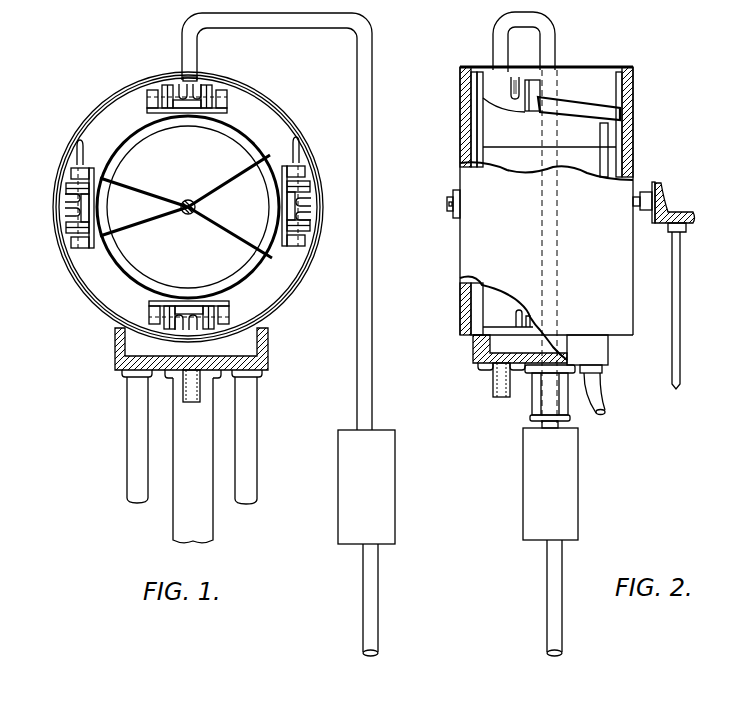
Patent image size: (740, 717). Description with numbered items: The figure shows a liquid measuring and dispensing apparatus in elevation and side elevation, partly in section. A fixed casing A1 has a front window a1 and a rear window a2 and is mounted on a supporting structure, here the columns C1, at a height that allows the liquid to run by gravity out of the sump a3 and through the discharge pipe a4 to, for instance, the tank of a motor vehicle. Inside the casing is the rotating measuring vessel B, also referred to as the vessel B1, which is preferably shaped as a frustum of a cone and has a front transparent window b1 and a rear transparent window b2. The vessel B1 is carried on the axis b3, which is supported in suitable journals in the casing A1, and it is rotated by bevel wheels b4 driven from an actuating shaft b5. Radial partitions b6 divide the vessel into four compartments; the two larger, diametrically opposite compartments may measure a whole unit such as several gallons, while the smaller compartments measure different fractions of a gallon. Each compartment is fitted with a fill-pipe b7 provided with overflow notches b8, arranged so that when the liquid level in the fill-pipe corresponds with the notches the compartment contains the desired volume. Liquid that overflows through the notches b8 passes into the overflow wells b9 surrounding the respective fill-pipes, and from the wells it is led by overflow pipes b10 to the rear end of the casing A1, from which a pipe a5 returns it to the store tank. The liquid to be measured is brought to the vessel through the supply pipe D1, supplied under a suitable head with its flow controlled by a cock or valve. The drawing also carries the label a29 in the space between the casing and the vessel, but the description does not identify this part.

In FIG. 1, the fixed casing A1 is at (62, 151).
In FIG. 2, the fixed casing A1 is at (463, 257).
In FIG. 1, the measuring vessel B1 is at (262, 136).
In FIG. 1, the columns C1 is at (187, 520).
In FIG. 2, the columns C1 is at (532, 412).
In FIG. 1, the supply pipe D1 is at (181, 30).
In FIG. 2, the supply pipe D1 is at (533, 4).
In FIG. 1, the front window a1 is at (387, 515).
In FIG. 2, the front window a1 is at (460, 127).
In FIG. 2, the rear window a2 is at (634, 150).
In FIG. 1, the sump a3 is at (266, 348).
In FIG. 2, the sump a3 is at (492, 343).
In FIG. 1, the discharge pipe a4 is at (196, 404).
In FIG. 2, the discharge pipe a4 is at (502, 392).
In FIG. 2, the pipe a5 is at (601, 414).
In FIG. 1, the annular chamber a29 is at (85, 275).
In FIG. 2, the front transparent window b1 is at (481, 123).
In FIG. 2, the rear transparent window b2 is at (608, 136).
In FIG. 1, the axis b3 is at (189, 200).
In FIG. 2, the axis b3 is at (447, 203).
In FIG. 2, the bevel wheels b4 is at (669, 205).
In FIG. 2, the actuating shaft b5 is at (674, 386).
In FIG. 1, the radial partitions b6 is at (148, 220).
In FIG. 2, the radial partitions b6 is at (498, 163).
In FIG. 1, the fill-pipe b7 is at (166, 90).
In FIG. 2, the fill-pipe b7 is at (481, 80).
In FIG. 1, the overflow notches b8 is at (199, 82).
In FIG. 2, the overflow notches b8 is at (517, 77).
In FIG. 1, the overflow wells b9 is at (228, 97).
In FIG. 2, the overflow wells b9 is at (533, 90).
In FIG. 2, the overflow pipes b10 is at (607, 115).
In FIG. 2, the rotating measuring vessel B is at (592, 138).